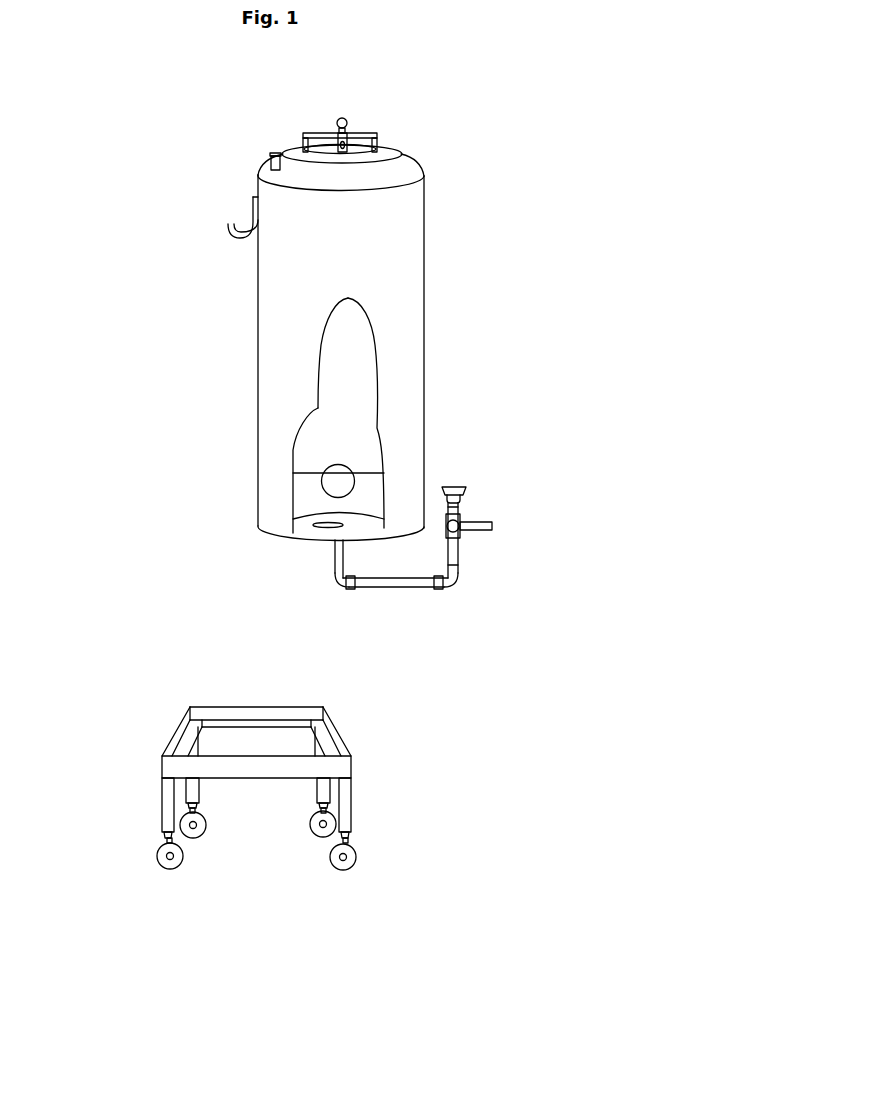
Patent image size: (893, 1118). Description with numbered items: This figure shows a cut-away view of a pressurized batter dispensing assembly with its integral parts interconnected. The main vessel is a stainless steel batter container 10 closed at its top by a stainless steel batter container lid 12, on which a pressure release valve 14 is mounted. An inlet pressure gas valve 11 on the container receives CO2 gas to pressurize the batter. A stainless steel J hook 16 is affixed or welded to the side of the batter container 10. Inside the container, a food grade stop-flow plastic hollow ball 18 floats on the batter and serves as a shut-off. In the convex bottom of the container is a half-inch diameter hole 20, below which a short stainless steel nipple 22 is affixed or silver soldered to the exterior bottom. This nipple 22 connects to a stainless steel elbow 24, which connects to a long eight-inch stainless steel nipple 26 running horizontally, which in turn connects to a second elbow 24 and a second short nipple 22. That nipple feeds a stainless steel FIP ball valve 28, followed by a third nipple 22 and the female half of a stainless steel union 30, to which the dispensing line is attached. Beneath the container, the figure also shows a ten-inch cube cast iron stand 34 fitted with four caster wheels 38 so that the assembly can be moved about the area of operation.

The batter container 10 is at (341, 343).
The inlet pressure gas valve 11 is at (270, 160).
The batter container lid 12 is at (388, 123).
The pressure release valve 14 is at (351, 148).
The J hook 16 is at (241, 238).
The stop-flow plastic hollow ball 18 is at (341, 467).
The half-inch diameter hole 20 is at (313, 525).
The stainless steel nipples 22 is at (335, 560).
The stainless steel elbows 24 is at (345, 589).
The eight-inch stainless steel nipple 26 is at (385, 588).
The FIP ball valve 28 is at (457, 535).
The female half of union 30 is at (455, 488).
The cast iron stand 34 is at (274, 768).
The caster wheels 38 is at (157, 859).